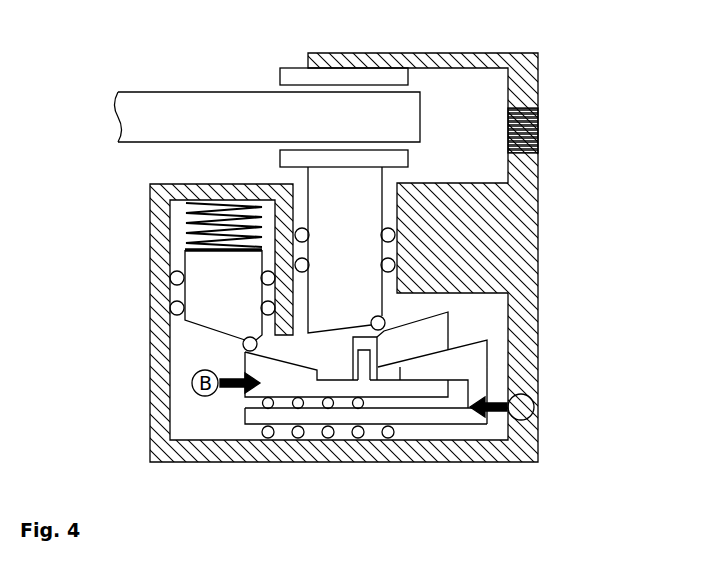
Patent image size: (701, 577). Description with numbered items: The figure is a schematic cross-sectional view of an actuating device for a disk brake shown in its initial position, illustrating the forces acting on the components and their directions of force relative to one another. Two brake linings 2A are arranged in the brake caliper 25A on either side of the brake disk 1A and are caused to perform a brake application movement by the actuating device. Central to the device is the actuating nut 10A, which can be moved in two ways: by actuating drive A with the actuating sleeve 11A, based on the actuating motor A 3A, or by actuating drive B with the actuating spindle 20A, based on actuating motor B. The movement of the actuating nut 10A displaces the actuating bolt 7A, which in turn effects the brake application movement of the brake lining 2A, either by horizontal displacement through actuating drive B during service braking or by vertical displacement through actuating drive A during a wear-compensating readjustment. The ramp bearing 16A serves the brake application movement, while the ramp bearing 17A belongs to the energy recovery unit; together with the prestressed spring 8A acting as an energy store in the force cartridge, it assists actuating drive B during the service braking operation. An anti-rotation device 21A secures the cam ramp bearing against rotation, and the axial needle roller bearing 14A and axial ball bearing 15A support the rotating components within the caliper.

The brake disk 1A is at (158, 104).
The brake lining 2A is at (296, 160).
The actuating motor A 3A is at (534, 405).
The actuating bolt 7A is at (357, 191).
The spring as energy store 8A is at (182, 233).
The actuating nut 10A is at (430, 326).
The actuating sleeve 11A is at (470, 358).
The axial bearing/needle roller bearing 14A is at (240, 405).
The axial bearing/ball bearing 15A is at (240, 433).
The ramp bearing (brake application movement) 16A is at (388, 319).
The ramp bearing (energy recovery unit) 17A is at (243, 344).
The actuating spindle 20A is at (257, 370).
The anti-rotation device for cam ramp bearing 21A is at (365, 384).
The brake caliper 25A is at (518, 230).